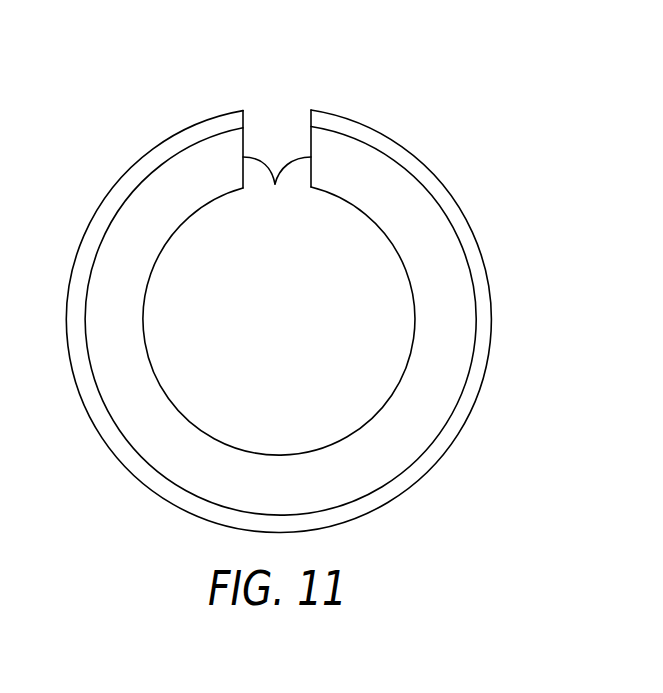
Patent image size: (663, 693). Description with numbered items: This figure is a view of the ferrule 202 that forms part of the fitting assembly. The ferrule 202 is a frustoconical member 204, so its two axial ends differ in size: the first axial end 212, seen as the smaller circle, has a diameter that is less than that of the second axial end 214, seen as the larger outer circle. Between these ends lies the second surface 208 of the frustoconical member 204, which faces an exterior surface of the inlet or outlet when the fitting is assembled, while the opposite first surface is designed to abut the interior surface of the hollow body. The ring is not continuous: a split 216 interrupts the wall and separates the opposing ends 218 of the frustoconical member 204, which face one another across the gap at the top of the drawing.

The ferrule 202 is at (582, 141).
The frustoconical member 204 is at (397, 196).
The second surface 208 is at (143, 432).
The first axial end 212 is at (160, 255).
The second axial end 214 is at (160, 160).
The split 216 is at (283, 116).
The opposing ends 218 is at (275, 184).